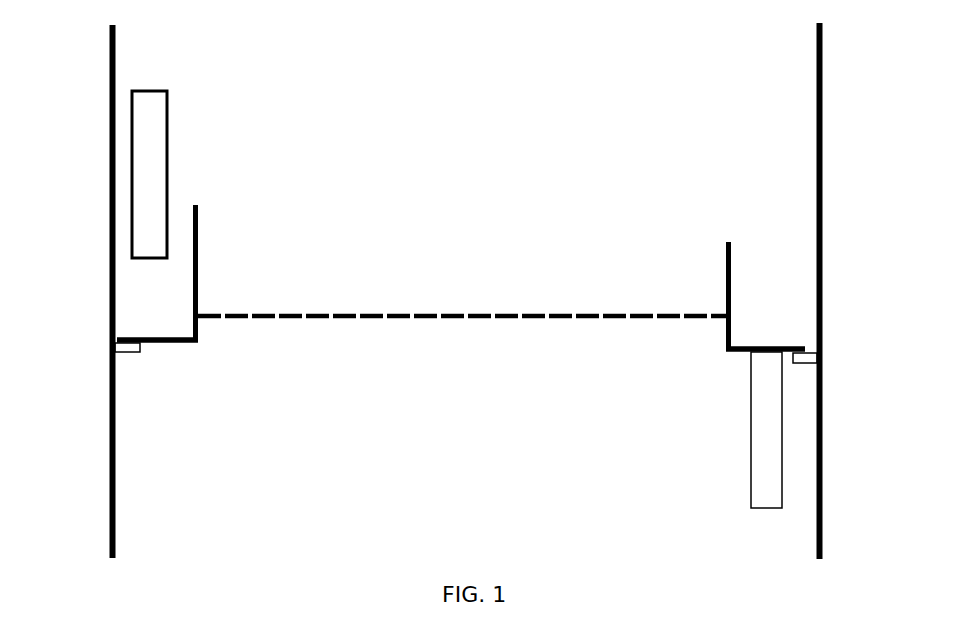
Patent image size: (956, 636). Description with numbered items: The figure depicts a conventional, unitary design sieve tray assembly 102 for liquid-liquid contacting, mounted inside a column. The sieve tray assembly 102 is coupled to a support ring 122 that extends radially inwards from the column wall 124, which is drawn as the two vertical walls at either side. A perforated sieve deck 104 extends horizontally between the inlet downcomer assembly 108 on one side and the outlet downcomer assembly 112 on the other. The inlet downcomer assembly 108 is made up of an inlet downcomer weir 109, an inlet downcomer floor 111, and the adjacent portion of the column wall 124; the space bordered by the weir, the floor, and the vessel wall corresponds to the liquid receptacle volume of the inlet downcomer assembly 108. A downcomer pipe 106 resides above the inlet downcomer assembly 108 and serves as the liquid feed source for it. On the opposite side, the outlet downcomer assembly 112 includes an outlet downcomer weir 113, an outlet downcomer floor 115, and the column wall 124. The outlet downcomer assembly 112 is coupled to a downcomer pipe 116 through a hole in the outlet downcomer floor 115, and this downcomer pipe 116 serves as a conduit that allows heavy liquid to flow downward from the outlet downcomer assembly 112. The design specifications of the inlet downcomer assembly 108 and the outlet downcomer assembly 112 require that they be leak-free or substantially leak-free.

The sieve tray assembly 102 is at (463, 272).
The perforated sieve deck 104 is at (455, 318).
The downcomer pipe 106 is at (164, 150).
The inlet downcomer assembly 108 is at (152, 296).
The inlet downcomer weir 109 is at (198, 255).
The inlet downcomer floor 111 is at (148, 344).
The outlet downcomer assembly 112 is at (770, 307).
The outlet downcomer weir 113 is at (726, 262).
The outlet downcomer floor 115 is at (738, 352).
The downcomer pipe 116 is at (751, 450).
The support ring 122 is at (125, 352).
The column wall 124 is at (110, 247).